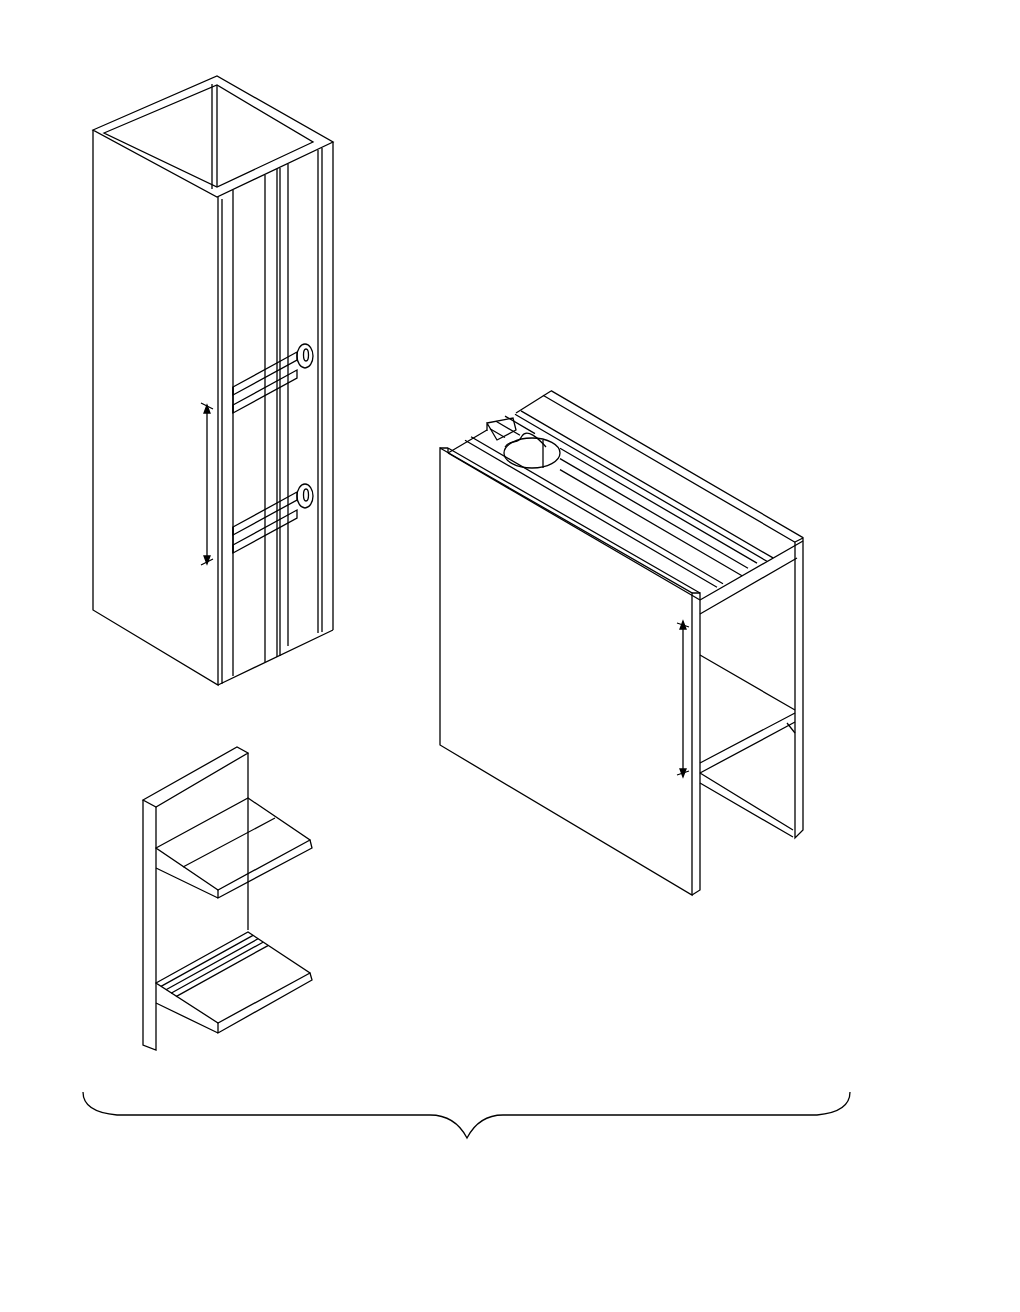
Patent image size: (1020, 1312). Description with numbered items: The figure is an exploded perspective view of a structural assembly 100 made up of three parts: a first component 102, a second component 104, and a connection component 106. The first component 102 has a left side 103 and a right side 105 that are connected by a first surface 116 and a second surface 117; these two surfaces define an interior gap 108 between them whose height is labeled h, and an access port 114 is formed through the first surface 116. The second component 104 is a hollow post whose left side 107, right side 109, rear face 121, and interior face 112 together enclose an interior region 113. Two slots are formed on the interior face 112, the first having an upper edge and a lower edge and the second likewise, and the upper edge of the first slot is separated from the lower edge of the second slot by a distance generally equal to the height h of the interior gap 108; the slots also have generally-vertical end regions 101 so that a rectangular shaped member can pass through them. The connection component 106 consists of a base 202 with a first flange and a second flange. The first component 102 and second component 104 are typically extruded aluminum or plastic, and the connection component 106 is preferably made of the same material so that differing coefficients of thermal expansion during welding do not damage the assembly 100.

The assembly 100 is at (641, 64).
The generally-vertical end regions 101 is at (303, 352).
The first component 102 is at (750, 508).
The left side 103 is at (567, 788).
The second component 104 is at (335, 233).
The right side 105 is at (800, 718).
The connection component 106 is at (149, 1047).
The left side 107 is at (152, 640).
The interior gap 108 is at (784, 628).
The right side 109 is at (335, 197).
The interior face 112 is at (306, 417).
The interior region 113 is at (203, 161).
The access port 114 is at (542, 437).
The first surface 116 is at (522, 408).
The second surface 117 is at (730, 762).
The rear face 121 is at (157, 100).
The base 202 is at (148, 908).